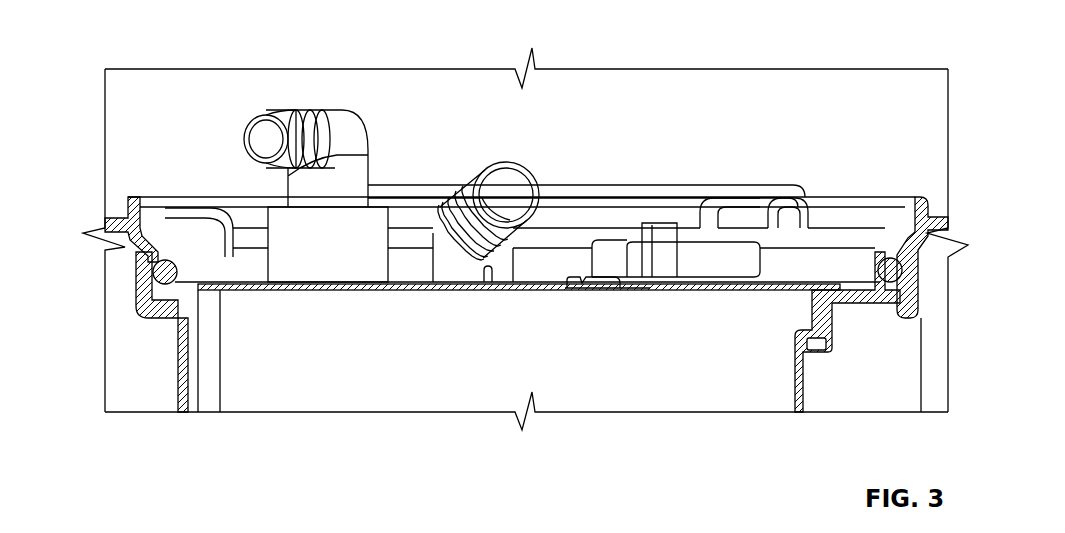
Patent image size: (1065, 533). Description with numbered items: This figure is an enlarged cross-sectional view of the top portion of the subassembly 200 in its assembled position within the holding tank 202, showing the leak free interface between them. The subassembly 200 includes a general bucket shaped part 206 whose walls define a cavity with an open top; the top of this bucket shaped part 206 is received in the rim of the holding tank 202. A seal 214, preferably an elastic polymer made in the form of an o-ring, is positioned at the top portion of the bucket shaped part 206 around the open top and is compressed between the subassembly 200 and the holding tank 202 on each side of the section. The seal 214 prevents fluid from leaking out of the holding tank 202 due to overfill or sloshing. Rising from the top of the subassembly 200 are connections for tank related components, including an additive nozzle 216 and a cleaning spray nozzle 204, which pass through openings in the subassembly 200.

The subassembly 200 is at (378, 355).
The holding tank 202 is at (126, 199).
The cleaning spray nozzle 204 is at (503, 185).
The bucket shaped part 206 is at (805, 368).
The seal 214 is at (197, 290).
The additive nozzle 216 is at (272, 140).